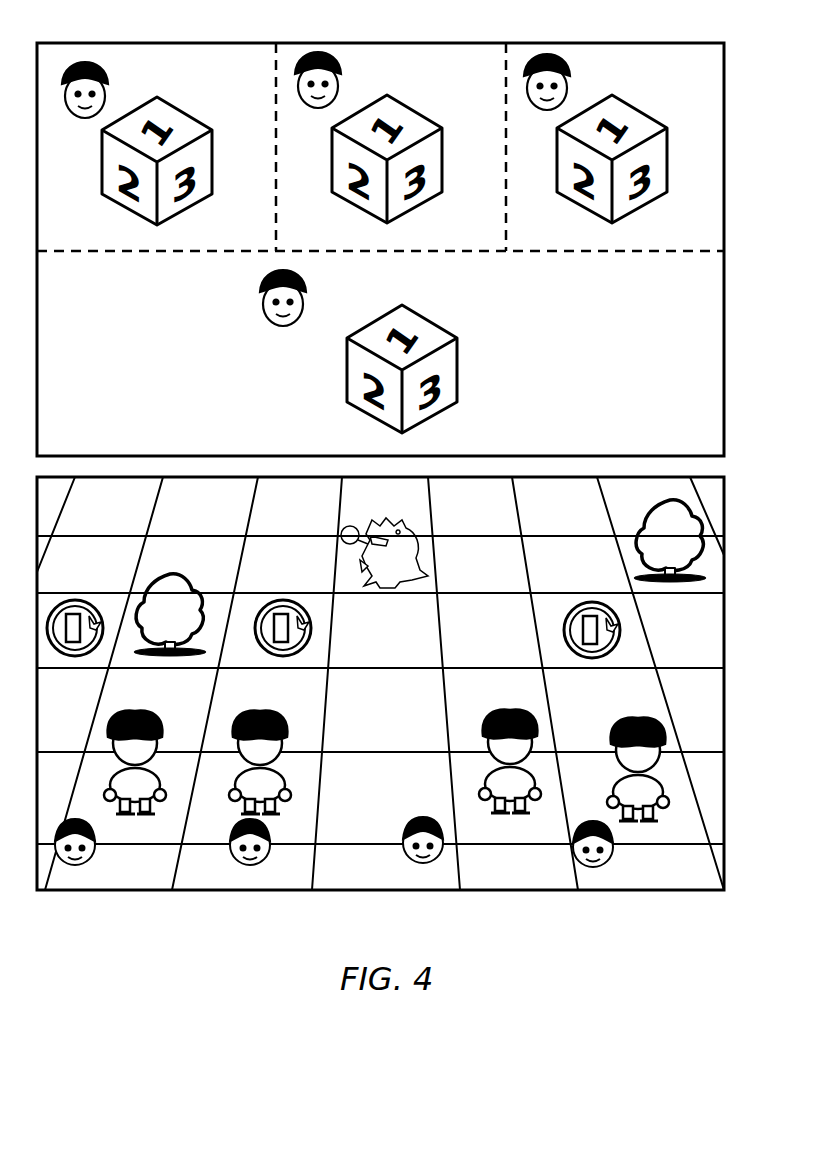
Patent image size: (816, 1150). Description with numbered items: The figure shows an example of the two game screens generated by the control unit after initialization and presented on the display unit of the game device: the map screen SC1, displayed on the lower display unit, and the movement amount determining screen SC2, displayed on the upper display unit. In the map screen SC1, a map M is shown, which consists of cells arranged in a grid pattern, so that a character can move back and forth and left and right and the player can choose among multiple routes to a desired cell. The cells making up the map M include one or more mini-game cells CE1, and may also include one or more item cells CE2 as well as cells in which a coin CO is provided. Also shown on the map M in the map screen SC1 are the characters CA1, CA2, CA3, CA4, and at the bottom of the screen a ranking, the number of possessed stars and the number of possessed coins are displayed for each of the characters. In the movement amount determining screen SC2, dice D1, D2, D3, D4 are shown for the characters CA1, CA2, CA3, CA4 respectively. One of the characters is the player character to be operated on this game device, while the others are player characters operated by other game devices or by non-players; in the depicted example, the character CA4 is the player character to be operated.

The movement amount determining screen SC2 is at (565, 43).
The map screen SC1 is at (554, 891).
The die D1 is at (209, 176).
The die D2 is at (440, 174).
The die D3 is at (662, 172).
The die D4 is at (455, 383).
The character CA1 is at (140, 728).
The character CA2 is at (256, 728).
The character CA3 is at (504, 726).
The character CA4 is at (638, 732).
The mini-game cell CE1 is at (344, 588).
The item cell CE2 is at (457, 588).
The coin CO is at (591, 602).
The map M is at (384, 828).